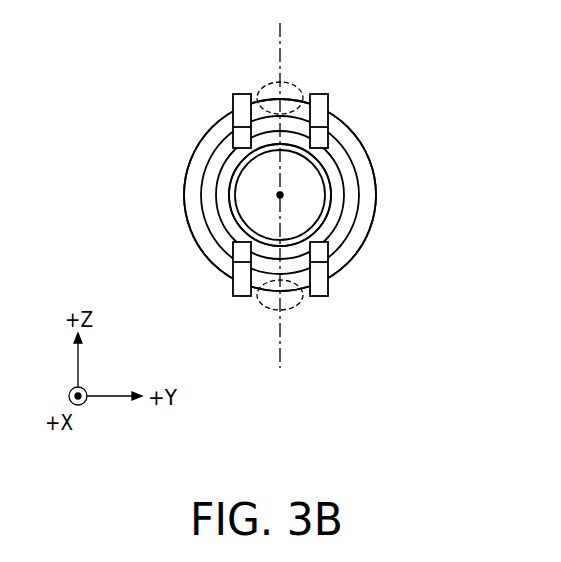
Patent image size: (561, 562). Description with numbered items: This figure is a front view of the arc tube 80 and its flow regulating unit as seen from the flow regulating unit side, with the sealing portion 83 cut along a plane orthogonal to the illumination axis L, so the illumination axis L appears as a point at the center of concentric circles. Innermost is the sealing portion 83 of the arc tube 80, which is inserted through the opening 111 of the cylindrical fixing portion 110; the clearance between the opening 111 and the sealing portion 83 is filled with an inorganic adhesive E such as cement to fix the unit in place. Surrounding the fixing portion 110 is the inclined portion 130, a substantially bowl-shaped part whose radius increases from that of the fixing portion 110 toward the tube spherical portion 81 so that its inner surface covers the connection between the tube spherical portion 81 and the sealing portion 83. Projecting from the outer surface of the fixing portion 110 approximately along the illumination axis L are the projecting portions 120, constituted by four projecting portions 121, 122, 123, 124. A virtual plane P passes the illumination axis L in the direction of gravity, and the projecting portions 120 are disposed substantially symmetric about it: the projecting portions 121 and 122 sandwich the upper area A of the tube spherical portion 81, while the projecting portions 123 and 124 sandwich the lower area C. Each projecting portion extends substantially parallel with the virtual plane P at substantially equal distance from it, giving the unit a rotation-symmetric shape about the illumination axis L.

The arc tube 80 is at (172, 167).
The tube spherical portion 81 is at (373, 165).
The sealing portion 83 is at (247, 202).
The fixing portion 110 is at (320, 213).
The opening 111 is at (312, 231).
The projecting portions 120 is at (277, 208).
The projecting portion 121 is at (328, 98).
The projecting portion 122 is at (233, 102).
The projecting portion 123 is at (328, 290).
The projecting portion 124 is at (233, 290).
The inclined portion 130 is at (358, 197).
The illumination axis L is at (277, 195).
The virtual plane P is at (280, 350).
The inorganic adhesive E is at (235, 220).
The upper area A is at (295, 81).
The lower area C is at (297, 308).